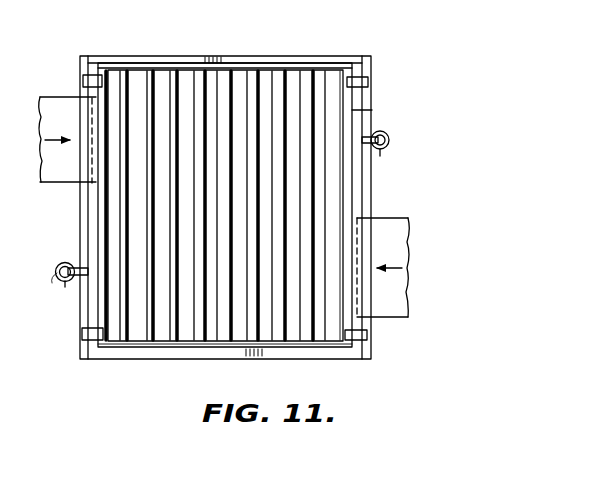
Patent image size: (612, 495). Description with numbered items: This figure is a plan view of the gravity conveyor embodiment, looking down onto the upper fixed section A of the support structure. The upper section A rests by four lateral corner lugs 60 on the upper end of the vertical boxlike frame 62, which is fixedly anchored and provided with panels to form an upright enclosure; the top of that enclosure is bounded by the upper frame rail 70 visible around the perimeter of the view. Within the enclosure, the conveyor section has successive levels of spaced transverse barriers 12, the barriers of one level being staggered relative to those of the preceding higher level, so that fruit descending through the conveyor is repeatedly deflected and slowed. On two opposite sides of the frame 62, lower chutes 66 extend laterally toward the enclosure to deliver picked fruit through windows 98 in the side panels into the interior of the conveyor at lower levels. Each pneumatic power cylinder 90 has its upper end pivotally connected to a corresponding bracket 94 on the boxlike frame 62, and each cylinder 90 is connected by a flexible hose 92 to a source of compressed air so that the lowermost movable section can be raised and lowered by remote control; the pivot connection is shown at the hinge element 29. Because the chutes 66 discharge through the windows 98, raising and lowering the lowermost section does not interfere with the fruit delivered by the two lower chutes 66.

The transverse barriers 12 is at (171, 331).
The hinge pin 29 is at (57, 278).
The lateral corner lugs 60 is at (86, 76).
The boxlike frame 62 is at (183, 54).
The lower chutes 66 is at (60, 97).
The outer frame 70 is at (282, 63).
The pneumatic power cylinders 90 is at (71, 263).
The flexible hose 92 is at (391, 140).
The bracket 94 is at (66, 283).
The windows 98 is at (57, 268).
The upper fixed section A is at (372, 110).